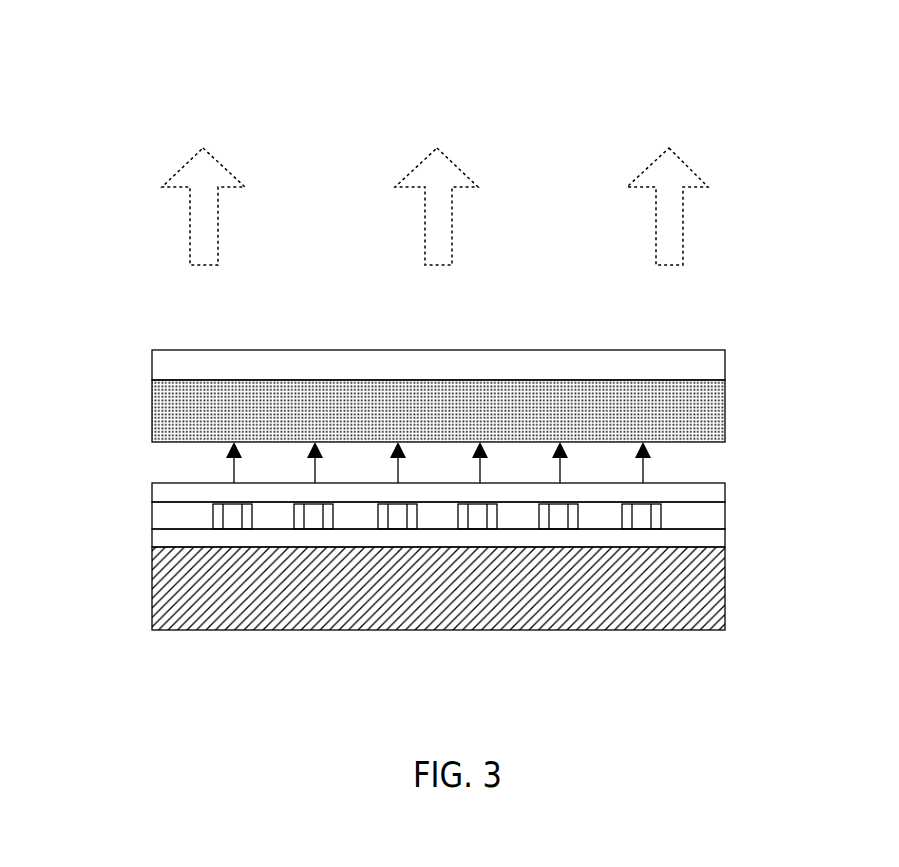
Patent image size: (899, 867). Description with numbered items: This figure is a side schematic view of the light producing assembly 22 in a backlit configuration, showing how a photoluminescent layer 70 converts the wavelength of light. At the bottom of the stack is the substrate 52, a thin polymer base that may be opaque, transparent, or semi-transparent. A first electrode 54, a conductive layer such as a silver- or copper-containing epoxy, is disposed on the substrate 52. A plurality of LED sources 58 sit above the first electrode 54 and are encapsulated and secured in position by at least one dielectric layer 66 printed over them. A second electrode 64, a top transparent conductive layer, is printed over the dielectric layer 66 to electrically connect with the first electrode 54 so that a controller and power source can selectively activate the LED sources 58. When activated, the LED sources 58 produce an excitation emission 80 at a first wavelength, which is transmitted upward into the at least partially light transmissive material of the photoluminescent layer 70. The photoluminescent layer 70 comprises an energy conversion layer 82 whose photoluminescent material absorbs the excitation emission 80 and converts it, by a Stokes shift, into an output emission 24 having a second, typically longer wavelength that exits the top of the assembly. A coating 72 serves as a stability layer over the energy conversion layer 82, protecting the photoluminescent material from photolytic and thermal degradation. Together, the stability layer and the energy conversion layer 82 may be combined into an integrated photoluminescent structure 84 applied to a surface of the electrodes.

The light producing assembly 22 is at (616, 76).
The output emission 24 is at (224, 169).
The substrate 52 is at (152, 580).
The first electrode 54 is at (152, 537).
The LED sources 58 is at (398, 522).
The second electrode 64 is at (152, 490).
The dielectric layer 66 is at (152, 515).
The photoluminescent layer 70 is at (152, 410).
The coating 72 is at (152, 366).
The excitation emission 80 is at (682, 467).
The energy conversion layer 82 is at (462, 361).
The integrated photoluminescent structure 84 is at (398, 396).